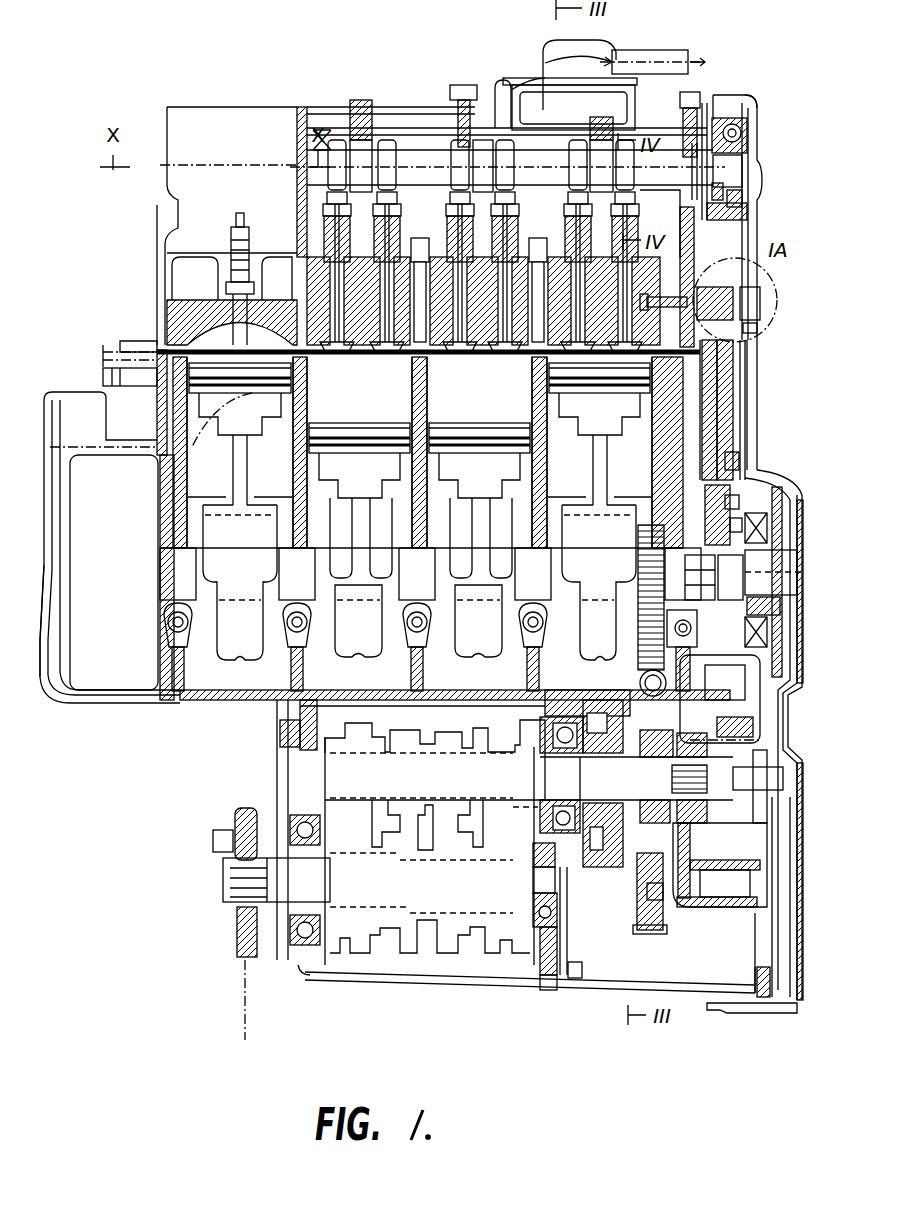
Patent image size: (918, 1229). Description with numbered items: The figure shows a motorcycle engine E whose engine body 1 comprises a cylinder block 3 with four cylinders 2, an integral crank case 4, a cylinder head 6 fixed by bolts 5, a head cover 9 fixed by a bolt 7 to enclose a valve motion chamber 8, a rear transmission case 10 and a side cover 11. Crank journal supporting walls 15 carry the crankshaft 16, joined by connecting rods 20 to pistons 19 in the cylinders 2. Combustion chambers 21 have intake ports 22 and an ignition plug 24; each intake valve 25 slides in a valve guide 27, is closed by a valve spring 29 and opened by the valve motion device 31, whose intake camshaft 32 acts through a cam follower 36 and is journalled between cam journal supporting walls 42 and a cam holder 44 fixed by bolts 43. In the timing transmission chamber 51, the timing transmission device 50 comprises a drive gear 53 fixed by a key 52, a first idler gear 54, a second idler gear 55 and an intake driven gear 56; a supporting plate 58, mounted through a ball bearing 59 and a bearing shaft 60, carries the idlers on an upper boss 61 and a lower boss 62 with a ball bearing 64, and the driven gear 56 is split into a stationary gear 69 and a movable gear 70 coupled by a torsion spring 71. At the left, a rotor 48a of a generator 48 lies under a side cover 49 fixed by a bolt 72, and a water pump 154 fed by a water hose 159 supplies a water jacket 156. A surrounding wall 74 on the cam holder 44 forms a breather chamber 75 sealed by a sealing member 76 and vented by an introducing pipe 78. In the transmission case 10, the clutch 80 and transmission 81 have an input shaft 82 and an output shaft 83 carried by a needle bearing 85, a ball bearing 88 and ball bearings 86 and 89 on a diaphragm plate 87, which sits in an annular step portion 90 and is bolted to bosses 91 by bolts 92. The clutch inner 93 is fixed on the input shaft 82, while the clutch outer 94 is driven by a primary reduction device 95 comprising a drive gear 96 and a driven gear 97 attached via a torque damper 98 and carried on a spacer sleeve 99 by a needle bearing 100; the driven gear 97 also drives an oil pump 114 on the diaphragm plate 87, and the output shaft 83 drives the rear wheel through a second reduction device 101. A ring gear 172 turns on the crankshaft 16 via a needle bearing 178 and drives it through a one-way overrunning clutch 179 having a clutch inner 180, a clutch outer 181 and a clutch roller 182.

The engine E is at (251, 66).
The cylinder head cover 1 is at (162, 302).
The cylinder block 2 is at (307, 400).
The crankcase 3 is at (757, 423).
The crankcase bottom wall 4 is at (214, 700).
The spark plug 5 is at (479, 276).
The camshaft sprocket 6 is at (762, 187).
The bolt 7 is at (465, 85).
The cylinder head 8 is at (660, 223).
The camshaft housing 9 is at (410, 107).
The lower case 10 is at (365, 980).
The side cover 11 is at (790, 707).
The bearing web 15 is at (430, 574).
The main bearing 16 is at (166, 590).
The piston 19 is at (419, 430).
The connecting rod 20 is at (248, 466).
The cylinder bore 21 is at (220, 322).
The combustion chamber 22 is at (360, 335).
The spark plug 24 is at (231, 243).
The valve 25 is at (325, 280).
The valve spring 27 is at (324, 244).
The tappet 29 is at (325, 200).
The camshaft holder 31 is at (398, 128).
The camshaft 32 is at (307, 160).
The cam journal 36 is at (360, 166).
The cam journal 42 is at (541, 166).
The bearing cap 43 is at (605, 117).
The clamp 44 is at (322, 128).
The oil pan 48 is at (103, 683).
The oil chamber 48a is at (98, 561).
The oil pan wall 49 is at (44, 660).
The cam chain 50 is at (738, 395).
The chain guide 51 is at (745, 410).
The gear 52 is at (730, 577).
The bolt 53 is at (739, 505).
The washer 54 is at (742, 528).
The chain tensioner 55 is at (740, 373).
The cover assembly 56 is at (713, 67).
The chain guide 58 is at (717, 437).
The gear 59 is at (700, 577).
The tensioner body 60 is at (760, 300).
The tensioner cap 61 is at (757, 328).
The bearing 62 is at (739, 463).
The tensioner bolt 64 is at (713, 289).
The cover plate 69 is at (725, 95).
The outer cover 70 is at (748, 95).
The bolt hole 71 is at (742, 133).
The oil passage 72 is at (117, 352).
The breather plate 74 is at (511, 101).
The breather chamber 75 is at (555, 128).
The breather pipe 76 is at (505, 80).
The breather outlet 78 is at (662, 52).
The pump housing 80 is at (704, 916).
The transmission gears 81 is at (474, 730).
The main shaft 82 is at (636, 776).
The output shaft 83 is at (276, 880).
The bearing boss 85 is at (279, 755).
The bearing 86 is at (553, 748).
The partition wall 87 is at (567, 940).
The bearing 88 is at (300, 946).
The bearing 89 is at (546, 885).
The drain plug 90 is at (550, 992).
The bottom plate 91 is at (429, 978).
The bolt 92 is at (582, 972).
The cover 93 is at (705, 841).
The pump plate 94 is at (737, 908).
The oil pump 95 is at (654, 942).
The primary gear 96 is at (638, 605).
The pump shaft 97 is at (637, 915).
The idler gear 98 is at (640, 684).
The splined portion 99 is at (712, 786).
The pump gear 100 is at (647, 893).
The drive sprocket 101 is at (230, 818).
The bearing 114 is at (593, 867).
The gasket 154 is at (133, 340).
The oil jet 156 is at (245, 402).
The oil pipe 159 is at (103, 380).
The generator rotor 172 is at (783, 657).
The generator shaft 178 is at (797, 563).
The starter clutch 179 is at (720, 699).
The rotor plate 180 is at (781, 610).
The bearing 181 is at (768, 522).
The bearing 182 is at (768, 633).